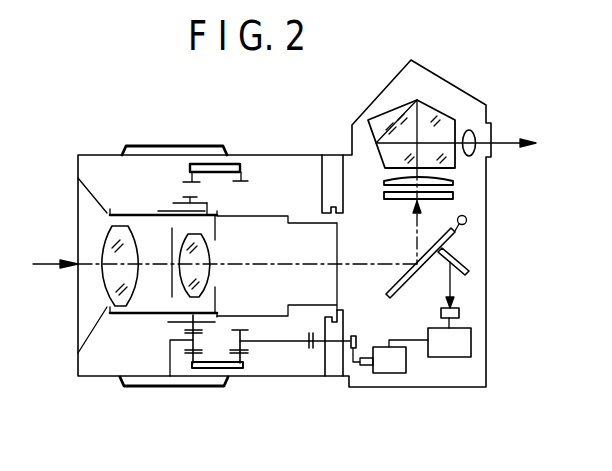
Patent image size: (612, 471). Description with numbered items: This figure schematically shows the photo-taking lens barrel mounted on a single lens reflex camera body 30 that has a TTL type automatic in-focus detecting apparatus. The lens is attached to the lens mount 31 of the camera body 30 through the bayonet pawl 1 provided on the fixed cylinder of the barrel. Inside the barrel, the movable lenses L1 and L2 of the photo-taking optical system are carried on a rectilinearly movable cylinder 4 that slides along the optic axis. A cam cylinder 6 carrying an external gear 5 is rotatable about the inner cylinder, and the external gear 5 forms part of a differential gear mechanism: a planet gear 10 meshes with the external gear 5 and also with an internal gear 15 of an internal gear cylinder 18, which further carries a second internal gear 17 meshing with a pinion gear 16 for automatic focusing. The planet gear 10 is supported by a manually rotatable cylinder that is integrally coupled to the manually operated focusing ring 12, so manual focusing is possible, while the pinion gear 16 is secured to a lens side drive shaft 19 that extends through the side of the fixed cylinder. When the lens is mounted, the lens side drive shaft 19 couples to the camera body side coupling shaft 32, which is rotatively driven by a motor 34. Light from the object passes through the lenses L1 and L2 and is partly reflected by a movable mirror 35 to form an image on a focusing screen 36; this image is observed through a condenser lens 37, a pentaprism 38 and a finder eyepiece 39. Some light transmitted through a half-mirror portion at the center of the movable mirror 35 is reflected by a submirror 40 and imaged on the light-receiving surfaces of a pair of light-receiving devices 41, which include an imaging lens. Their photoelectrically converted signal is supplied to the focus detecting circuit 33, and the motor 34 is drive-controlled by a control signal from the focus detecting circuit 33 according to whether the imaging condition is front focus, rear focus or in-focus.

The bayonet pawl 1 is at (333, 207).
The rectilinearly movable cylinder 4 is at (124, 219).
The external gear 5 is at (184, 199).
The cam cylinder 6 is at (214, 203).
The planet gear 10 is at (170, 340).
The manually operated focusing ring 12 is at (155, 144).
The internal gear 15 is at (186, 181).
The pinion gear 16 is at (248, 350).
The internal gear 17 is at (246, 177).
The internal gear cylinder 18 is at (235, 164).
The lens side drive shaft 19 is at (288, 343).
The camera body 30 is at (491, 204).
The lens mount 31 is at (337, 332).
The camera body side coupling shaft 32 is at (331, 342).
The focus detecting circuit 33 is at (471, 340).
The motor 34 is at (390, 374).
The movable mirror 35 is at (453, 238).
The focusing screen 36 is at (454, 195).
The condenser lens 37 is at (454, 179).
The pentaprism 38 is at (446, 117).
The finder eyepiece 39 is at (471, 130).
The submirror 40 is at (469, 270).
The light-receiving devices 41 is at (459, 315).
The movable lens L1 is at (110, 252).
The movable lens L2 is at (207, 258).